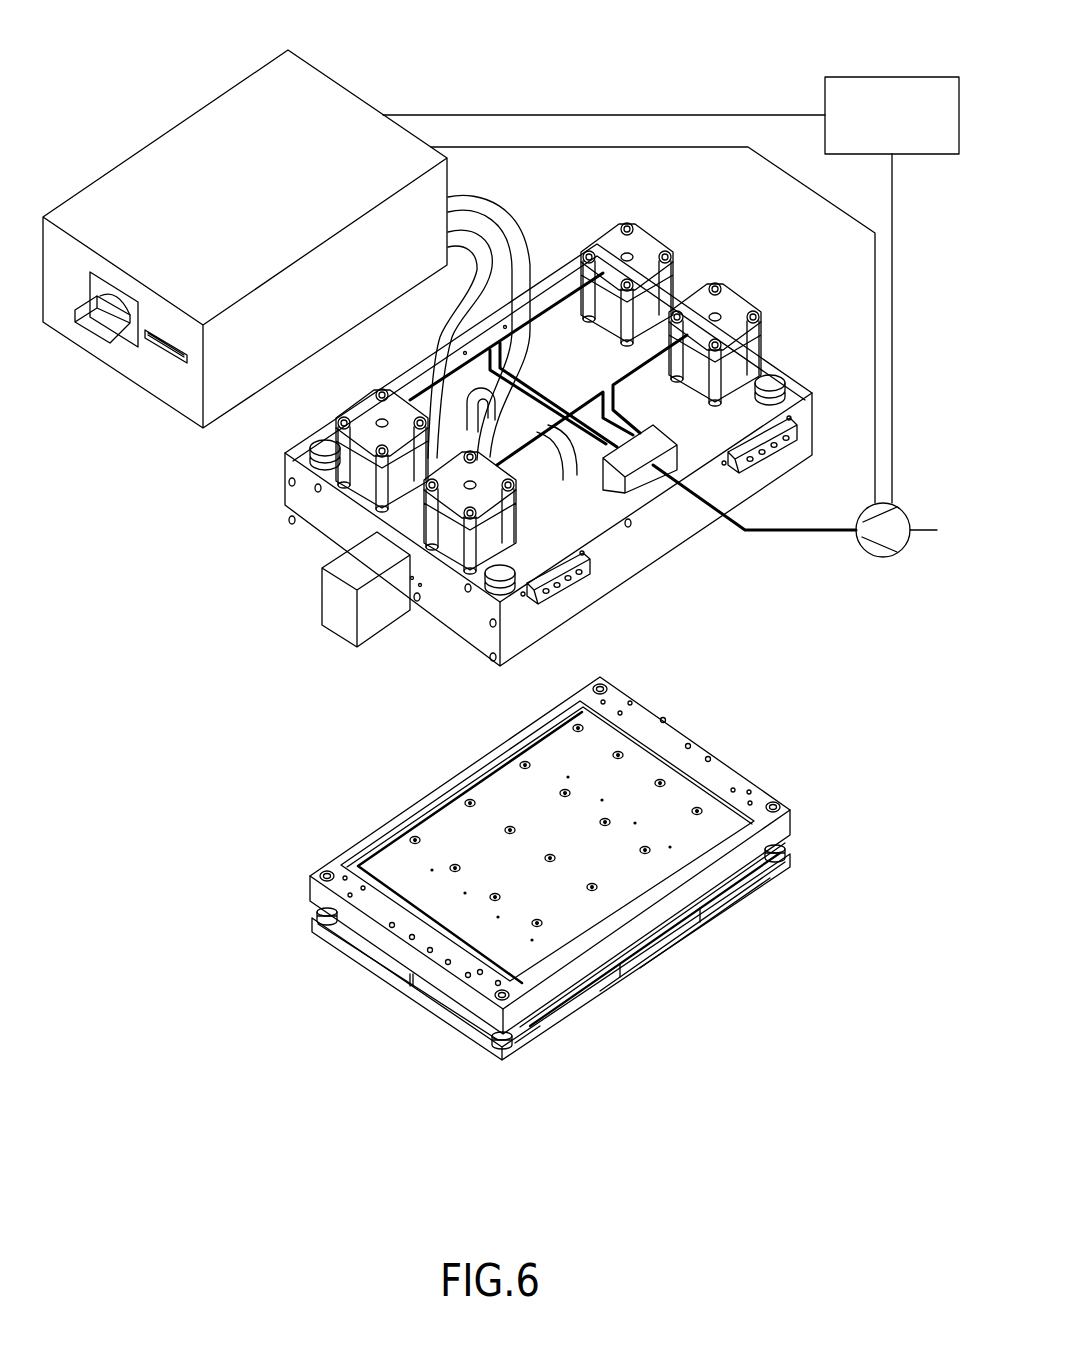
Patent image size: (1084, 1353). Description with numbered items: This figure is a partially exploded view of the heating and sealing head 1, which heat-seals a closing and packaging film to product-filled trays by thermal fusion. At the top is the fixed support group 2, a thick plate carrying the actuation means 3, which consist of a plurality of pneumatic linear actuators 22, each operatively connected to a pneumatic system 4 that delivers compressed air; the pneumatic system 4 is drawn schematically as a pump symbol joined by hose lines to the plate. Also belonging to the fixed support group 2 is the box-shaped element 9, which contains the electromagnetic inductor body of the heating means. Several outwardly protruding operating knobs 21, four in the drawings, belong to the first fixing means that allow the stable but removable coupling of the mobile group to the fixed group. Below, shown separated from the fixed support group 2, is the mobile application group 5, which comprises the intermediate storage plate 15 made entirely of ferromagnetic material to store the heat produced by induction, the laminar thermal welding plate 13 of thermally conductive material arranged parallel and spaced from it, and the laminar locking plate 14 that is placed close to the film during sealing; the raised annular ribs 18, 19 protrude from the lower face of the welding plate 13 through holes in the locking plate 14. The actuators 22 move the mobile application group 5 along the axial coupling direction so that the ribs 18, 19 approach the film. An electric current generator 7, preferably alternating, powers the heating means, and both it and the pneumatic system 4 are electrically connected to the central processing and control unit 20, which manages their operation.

The heating and sealing head 1 is at (281, 692).
The fixed support group 2 is at (544, 427).
The actuation means 3 is at (591, 199).
The pneumatic system 4 is at (842, 568).
The mobile application group 5 is at (545, 890).
The electric current generator 7 is at (207, 132).
The box-shaped element 9 is at (660, 537).
The laminar thermal welding plate 13 is at (310, 912).
The laminar locking plate 14 is at (513, 1050).
The intermediate storage plate 15 is at (492, 793).
The raised annular rib 18 is at (583, 988).
The raised annular rib 19 is at (747, 875).
The central processing and control unit 20 is at (887, 88).
The operating knobs 21 is at (773, 378).
The pneumatic linear actuators 22 is at (735, 297).